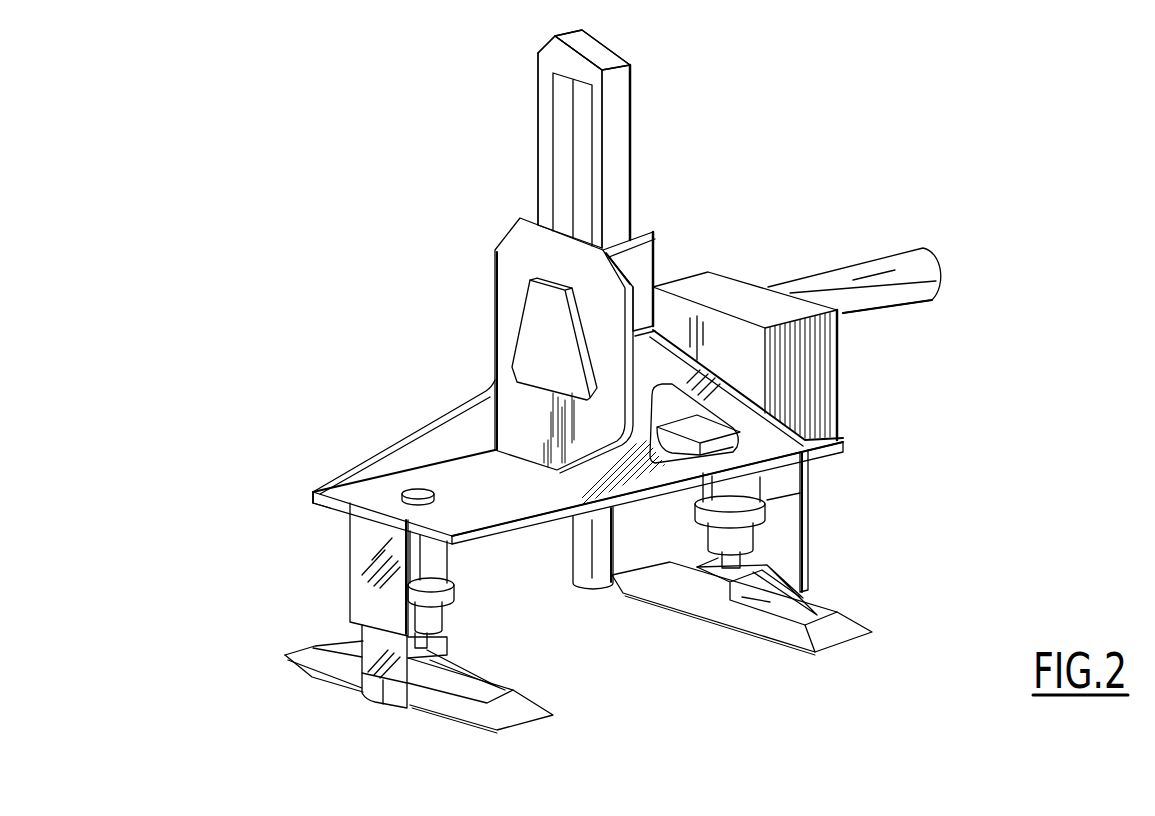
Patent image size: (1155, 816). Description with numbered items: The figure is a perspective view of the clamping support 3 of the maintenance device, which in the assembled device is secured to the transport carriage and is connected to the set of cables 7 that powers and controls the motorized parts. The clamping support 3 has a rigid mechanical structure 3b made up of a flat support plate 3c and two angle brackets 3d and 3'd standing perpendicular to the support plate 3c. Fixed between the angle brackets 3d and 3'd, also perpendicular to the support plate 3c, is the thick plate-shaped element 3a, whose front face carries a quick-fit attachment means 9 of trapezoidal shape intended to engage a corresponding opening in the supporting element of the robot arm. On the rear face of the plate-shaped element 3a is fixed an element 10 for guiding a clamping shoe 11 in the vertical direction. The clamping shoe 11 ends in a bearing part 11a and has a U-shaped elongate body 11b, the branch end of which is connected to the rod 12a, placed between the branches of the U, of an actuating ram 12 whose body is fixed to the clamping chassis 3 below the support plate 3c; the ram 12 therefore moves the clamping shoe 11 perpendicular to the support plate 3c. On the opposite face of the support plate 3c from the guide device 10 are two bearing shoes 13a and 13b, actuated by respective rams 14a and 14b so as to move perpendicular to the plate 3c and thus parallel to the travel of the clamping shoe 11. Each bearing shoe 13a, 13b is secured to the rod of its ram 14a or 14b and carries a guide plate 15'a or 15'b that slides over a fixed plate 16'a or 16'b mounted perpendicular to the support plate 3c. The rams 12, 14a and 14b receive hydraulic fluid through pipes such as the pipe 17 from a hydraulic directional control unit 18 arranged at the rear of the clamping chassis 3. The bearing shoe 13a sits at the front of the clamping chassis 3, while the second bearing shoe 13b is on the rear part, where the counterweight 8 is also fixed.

The clamping support 3 is at (274, 447).
The plate-shaped element 3a is at (520, 265).
The rigid mechanical structure 3b is at (550, 503).
The support plate 3c is at (360, 495).
The angle bracket 3d is at (838, 432).
The angle bracket 3'd is at (404, 435).
The set of cables 7 is at (853, 282).
The counterweight 8 is at (812, 365).
The quick-fit attachment means 9 is at (540, 343).
The guide element 10 is at (640, 262).
The clamping shoe 11 is at (617, 168).
The bearing part 11a is at (587, 33).
The elongate body 11b is at (550, 62).
The actuating ram 12 is at (588, 557).
The rod 12a is at (585, 165).
The bearing shoe 13a is at (355, 703).
The bearing shoe 13b is at (853, 553).
The ram 14a is at (440, 562).
The ram 14b is at (738, 490).
The guide plate 15'a is at (387, 693).
The guide plate 15'b is at (778, 591).
The fixed plate 16'a is at (350, 569).
The fixed plate 16'b is at (814, 521).
The pipe 17 is at (437, 497).
The hydraulic directional control unit 18 is at (712, 445).